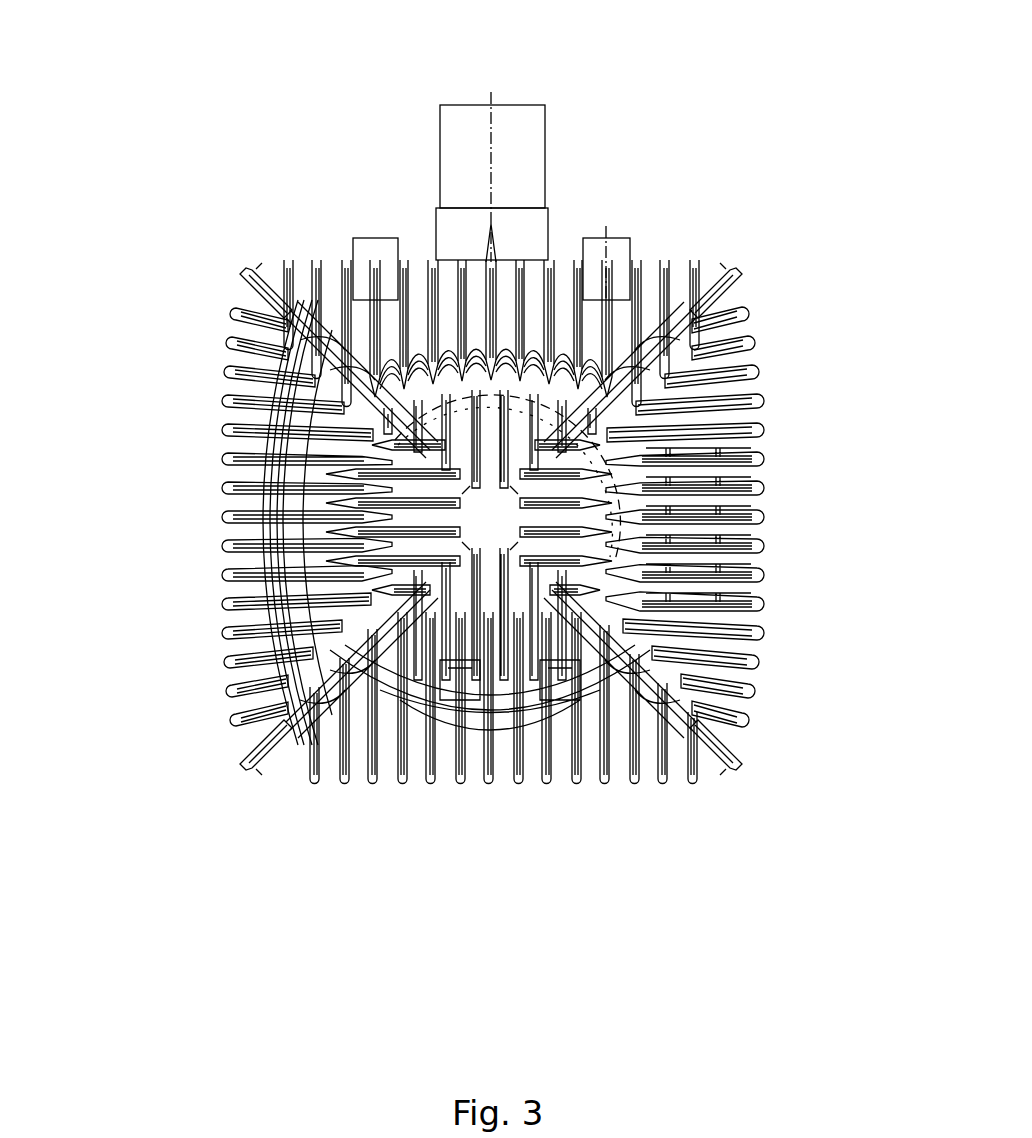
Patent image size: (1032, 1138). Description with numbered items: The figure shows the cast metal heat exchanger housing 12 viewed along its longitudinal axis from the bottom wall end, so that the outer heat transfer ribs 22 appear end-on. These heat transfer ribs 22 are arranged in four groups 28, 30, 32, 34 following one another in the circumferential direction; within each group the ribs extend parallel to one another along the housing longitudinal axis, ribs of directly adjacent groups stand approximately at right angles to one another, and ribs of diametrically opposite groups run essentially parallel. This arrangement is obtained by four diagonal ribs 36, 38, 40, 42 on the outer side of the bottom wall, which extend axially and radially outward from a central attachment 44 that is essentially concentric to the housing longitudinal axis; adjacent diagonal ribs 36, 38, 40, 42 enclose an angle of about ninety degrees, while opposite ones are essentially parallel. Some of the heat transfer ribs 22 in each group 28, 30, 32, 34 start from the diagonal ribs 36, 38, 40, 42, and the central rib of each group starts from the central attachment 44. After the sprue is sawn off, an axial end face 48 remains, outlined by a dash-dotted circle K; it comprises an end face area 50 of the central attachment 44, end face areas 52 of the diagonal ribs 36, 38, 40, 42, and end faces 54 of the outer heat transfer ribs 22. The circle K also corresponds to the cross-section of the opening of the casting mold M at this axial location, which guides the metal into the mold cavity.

The heat exchanger housing 12 is at (787, 85).
The group of heat transfer ribs 34 is at (632, 184).
The heat transfer ribs 22 is at (240, 400).
The group of heat transfer ribs 28 is at (136, 436).
The group of heat transfer ribs 30 is at (491, 912).
The group of heat transfer ribs 32 is at (815, 546).
The central attachment 44 is at (486, 486).
The end face areas of the diagonal ribs 52 is at (548, 568).
The end faces of the heat transfer ribs 54 is at (493, 408).
The end face area of the central attachment 50 is at (490, 525).
The diagonal rib 36 is at (428, 412).
The diagonal rib 42 is at (618, 489).
The diagonal rib 38 is at (410, 592).
The diagonal rib 40 is at (640, 596).
The axial end face 48 is at (467, 630).
The circle K is at (578, 410).
The casting mold M is at (647, 417).